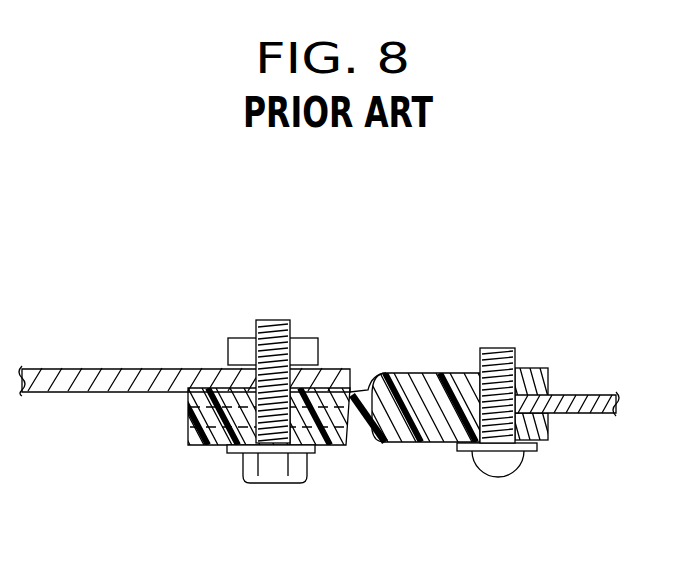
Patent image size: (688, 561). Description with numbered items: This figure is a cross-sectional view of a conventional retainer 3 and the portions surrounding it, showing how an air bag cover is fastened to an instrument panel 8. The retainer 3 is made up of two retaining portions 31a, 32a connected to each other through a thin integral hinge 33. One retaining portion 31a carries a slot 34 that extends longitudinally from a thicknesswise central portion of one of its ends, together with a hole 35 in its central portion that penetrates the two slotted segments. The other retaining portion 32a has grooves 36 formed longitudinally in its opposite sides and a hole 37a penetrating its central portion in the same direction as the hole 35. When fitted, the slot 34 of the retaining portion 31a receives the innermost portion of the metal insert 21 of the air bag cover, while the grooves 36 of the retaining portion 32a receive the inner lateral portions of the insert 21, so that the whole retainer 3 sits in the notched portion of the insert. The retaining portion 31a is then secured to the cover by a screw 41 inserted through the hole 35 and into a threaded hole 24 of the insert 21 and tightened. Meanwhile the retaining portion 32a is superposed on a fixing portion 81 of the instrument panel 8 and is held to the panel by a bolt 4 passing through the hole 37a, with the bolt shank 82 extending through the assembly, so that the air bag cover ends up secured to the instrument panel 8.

The instrument panel 8 is at (105, 367).
The fixing portion 81 is at (228, 350).
The bolt 82 is at (257, 357).
The grooves 36 is at (187, 415).
The retaining portion 32a is at (222, 438).
The bolt 4 is at (263, 485).
The hole 37a is at (320, 447).
The integral hinge 33 is at (358, 403).
The retainer 3 is at (437, 373).
The slot 34 is at (447, 445).
The hole 35 is at (518, 353).
The retaining portion 31a is at (540, 370).
The metal insert 21 is at (595, 390).
The threaded hole 24 is at (522, 423).
The screw 41 is at (497, 477).